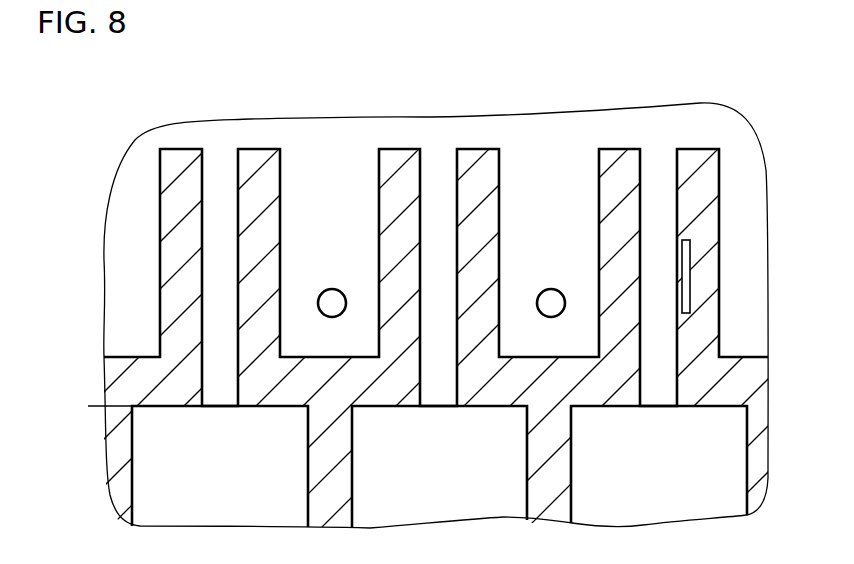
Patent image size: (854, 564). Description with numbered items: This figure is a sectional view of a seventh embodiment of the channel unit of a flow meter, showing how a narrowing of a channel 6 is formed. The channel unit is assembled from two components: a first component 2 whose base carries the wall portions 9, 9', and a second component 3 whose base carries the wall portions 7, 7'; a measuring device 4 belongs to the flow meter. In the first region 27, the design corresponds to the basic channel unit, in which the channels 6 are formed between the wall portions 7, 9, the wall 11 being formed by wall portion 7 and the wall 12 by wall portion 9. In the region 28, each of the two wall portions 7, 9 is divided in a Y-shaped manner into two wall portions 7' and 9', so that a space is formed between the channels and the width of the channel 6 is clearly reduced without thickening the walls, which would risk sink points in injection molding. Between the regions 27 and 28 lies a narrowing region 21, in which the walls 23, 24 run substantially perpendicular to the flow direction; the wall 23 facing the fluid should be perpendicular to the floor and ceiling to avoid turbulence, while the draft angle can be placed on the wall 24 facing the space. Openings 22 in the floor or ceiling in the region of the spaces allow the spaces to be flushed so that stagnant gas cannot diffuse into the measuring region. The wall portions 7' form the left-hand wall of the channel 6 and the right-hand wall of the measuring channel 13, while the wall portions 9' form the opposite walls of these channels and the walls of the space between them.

The first component 2 is at (519, 457).
The second component 3 is at (301, 427).
The measuring device 4 is at (692, 283).
The channel 6 is at (433, 175).
The wall portion 7 is at (304, 466).
The wall portion 7' is at (395, 238).
The wall portion 9 is at (576, 464).
The wall portion 9' is at (478, 238).
The wall 11 is at (414, 247).
The wall 12 is at (468, 243).
The measuring channel 13 is at (658, 162).
The narrowing region 21 is at (427, 413).
The opening 22 is at (551, 288).
The wall 23 is at (714, 409).
The wall 24 is at (746, 344).
The first region 27 is at (397, 466).
The region 28 is at (393, 277).